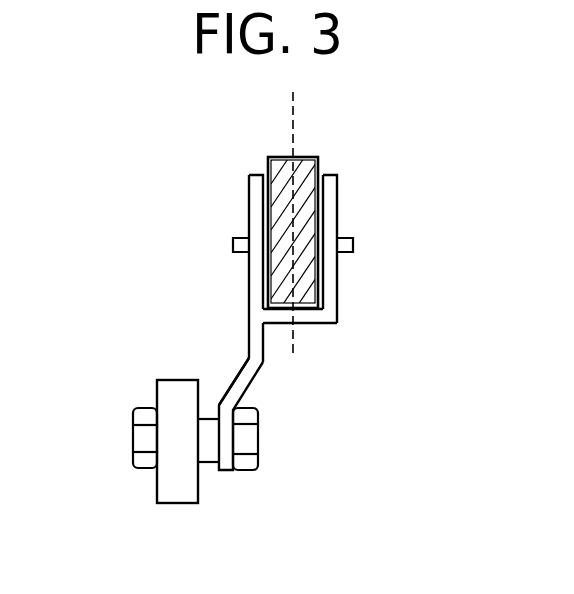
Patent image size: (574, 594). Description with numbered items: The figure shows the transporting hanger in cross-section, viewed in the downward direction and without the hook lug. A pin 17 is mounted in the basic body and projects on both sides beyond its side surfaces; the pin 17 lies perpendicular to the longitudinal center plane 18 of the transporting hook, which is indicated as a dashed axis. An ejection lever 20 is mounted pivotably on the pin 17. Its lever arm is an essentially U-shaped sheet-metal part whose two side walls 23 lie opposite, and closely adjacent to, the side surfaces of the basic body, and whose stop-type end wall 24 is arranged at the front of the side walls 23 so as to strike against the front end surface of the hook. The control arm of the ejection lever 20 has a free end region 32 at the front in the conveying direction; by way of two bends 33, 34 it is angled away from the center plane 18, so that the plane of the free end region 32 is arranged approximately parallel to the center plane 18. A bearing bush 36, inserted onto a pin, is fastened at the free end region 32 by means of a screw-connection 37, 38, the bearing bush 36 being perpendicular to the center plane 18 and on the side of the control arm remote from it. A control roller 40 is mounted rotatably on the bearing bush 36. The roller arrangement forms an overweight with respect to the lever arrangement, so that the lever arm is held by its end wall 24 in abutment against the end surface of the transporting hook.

The pin 17 is at (353, 245).
The longitudinal center plane 18 is at (293, 120).
The ejection lever 20 is at (248, 325).
The side walls 23 is at (248, 205).
The end wall 24 is at (315, 317).
The free end region 32 is at (225, 468).
The bend 33 is at (248, 353).
The bend 34 is at (237, 405).
The bearing bush 36 is at (208, 457).
The screw-connection 37 is at (252, 460).
The screw-connection 38 is at (147, 442).
The control roller 40 is at (178, 498).